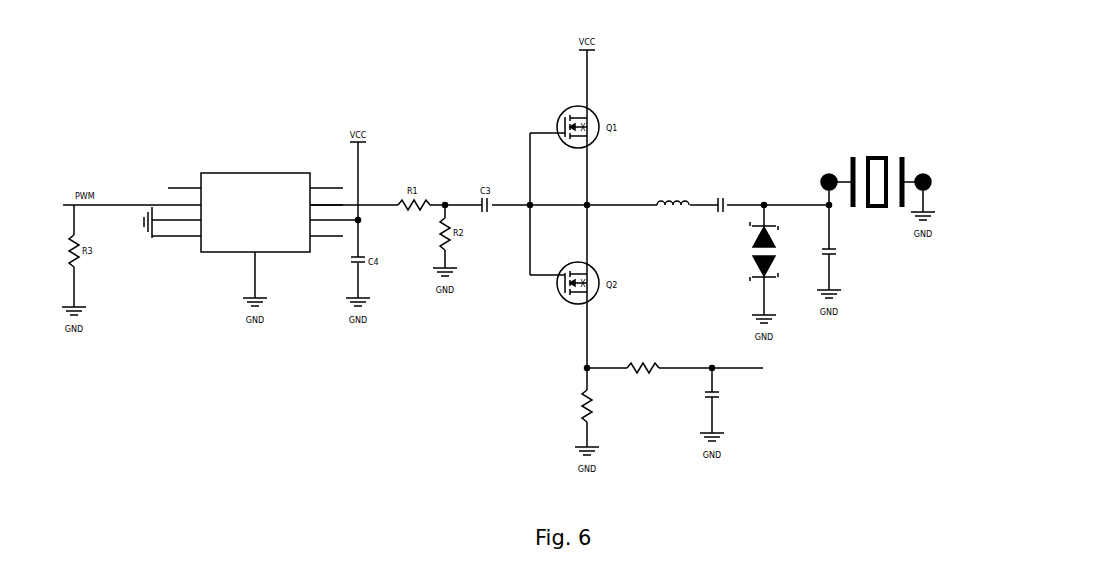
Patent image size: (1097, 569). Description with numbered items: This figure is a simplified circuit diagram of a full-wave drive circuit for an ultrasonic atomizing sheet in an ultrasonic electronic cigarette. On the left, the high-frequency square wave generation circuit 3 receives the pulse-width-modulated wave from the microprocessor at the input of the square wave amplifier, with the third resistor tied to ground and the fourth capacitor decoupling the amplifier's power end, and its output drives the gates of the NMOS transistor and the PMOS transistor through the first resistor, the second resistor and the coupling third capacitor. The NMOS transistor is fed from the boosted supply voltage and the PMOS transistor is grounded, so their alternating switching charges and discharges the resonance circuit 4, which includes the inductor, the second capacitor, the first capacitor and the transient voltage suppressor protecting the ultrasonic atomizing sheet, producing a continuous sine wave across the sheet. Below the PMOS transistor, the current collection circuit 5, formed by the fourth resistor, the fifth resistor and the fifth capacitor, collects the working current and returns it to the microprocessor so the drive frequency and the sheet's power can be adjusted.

The high-frequency square wave generation circuit 3 is at (243, 138).
The resonance circuit 4 is at (753, 155).
The current collection circuit 5 is at (550, 407).